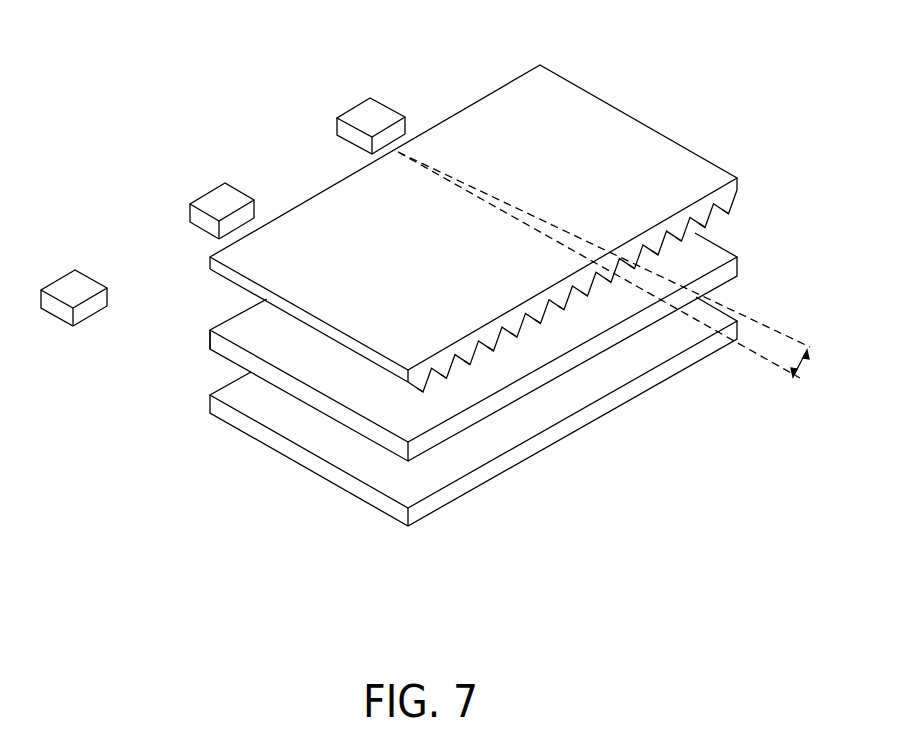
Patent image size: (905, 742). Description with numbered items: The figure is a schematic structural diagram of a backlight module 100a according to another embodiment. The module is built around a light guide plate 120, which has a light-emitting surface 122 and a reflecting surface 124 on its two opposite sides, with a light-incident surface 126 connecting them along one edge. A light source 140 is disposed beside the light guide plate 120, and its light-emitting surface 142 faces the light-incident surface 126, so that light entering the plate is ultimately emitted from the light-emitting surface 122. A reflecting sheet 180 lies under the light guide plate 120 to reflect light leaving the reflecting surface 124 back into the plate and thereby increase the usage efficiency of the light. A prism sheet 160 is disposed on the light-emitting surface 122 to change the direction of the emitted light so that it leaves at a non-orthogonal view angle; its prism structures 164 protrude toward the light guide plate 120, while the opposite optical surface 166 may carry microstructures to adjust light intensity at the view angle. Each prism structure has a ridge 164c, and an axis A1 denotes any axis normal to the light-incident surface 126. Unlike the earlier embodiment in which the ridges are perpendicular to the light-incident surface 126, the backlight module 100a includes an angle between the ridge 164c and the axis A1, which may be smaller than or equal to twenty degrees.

The backlight module 100a is at (106, 67).
The light guide plate 120 is at (413, 410).
The light-emitting surface 122 is at (482, 383).
The reflecting surface 124 is at (383, 452).
The light-incident surface 126 is at (205, 338).
The light source 140 is at (223, 202).
The light-emitting surface 142 is at (260, 207).
The prism sheet 160 is at (522, 205).
The prism structures 164 is at (727, 197).
The ridge 164c is at (778, 331).
The optical surface 166 is at (612, 140).
The reflecting sheet 180 is at (248, 408).
The axis A1 is at (757, 356).